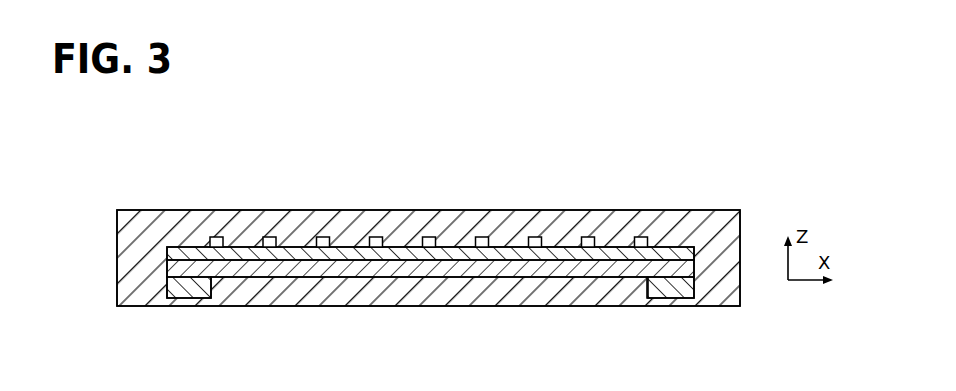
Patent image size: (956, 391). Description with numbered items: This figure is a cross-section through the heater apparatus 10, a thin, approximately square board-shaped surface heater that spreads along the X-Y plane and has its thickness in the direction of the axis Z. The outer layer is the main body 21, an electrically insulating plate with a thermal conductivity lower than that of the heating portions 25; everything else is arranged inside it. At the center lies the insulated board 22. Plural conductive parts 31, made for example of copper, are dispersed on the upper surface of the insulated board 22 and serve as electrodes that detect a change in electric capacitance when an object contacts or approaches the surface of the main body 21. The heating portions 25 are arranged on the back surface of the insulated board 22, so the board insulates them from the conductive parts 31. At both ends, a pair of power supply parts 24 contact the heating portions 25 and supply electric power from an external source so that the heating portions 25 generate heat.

The heater apparatus 10 is at (708, 131).
The main body 21 is at (722, 219).
The insulated board 22 is at (632, 254).
The power supply part 24 is at (185, 290).
The heating portion 25 is at (369, 268).
The conductive part 31 is at (267, 240).